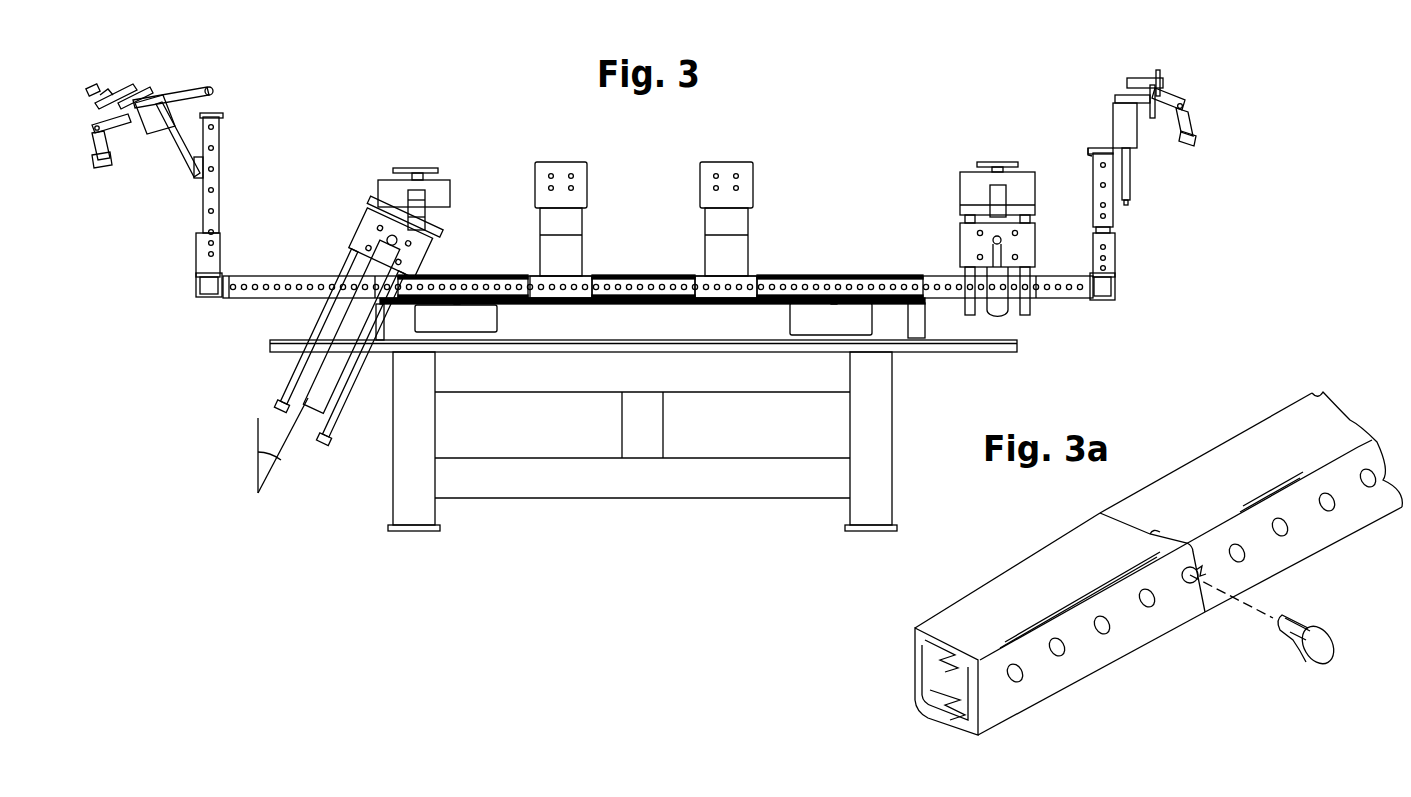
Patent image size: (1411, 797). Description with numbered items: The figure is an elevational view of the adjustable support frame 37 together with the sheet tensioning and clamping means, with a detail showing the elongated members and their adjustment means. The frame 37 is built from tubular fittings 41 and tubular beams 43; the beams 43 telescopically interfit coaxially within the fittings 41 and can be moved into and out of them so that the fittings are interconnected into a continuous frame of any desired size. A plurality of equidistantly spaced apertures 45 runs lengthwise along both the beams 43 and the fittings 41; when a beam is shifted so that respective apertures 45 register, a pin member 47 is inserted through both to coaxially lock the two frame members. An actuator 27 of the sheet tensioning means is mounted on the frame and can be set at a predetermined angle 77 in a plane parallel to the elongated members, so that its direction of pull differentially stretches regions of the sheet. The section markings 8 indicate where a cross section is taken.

In FIG. 3, the actuator 27 is at (327, 367).
In FIG. 3, the frame 37 is at (188, 268).
In FIG. 3, the tubular fitting 41 is at (463, 275).
In FIG. 3A, the tubular fitting 41 is at (967, 593).
In FIG. 3, the tubular beam 43 is at (266, 273).
In FIG. 3A, the tubular beam 43 is at (1353, 532).
In FIG. 3, the aperture 45 is at (245, 287).
In FIG. 3A, the aperture 45 is at (1055, 643).
In FIG. 3A, the pin member 47 is at (1290, 652).
In FIG. 3, the angle 77 is at (283, 462).
In FIG. 3, the section line 8- 8 is at (941, 185).